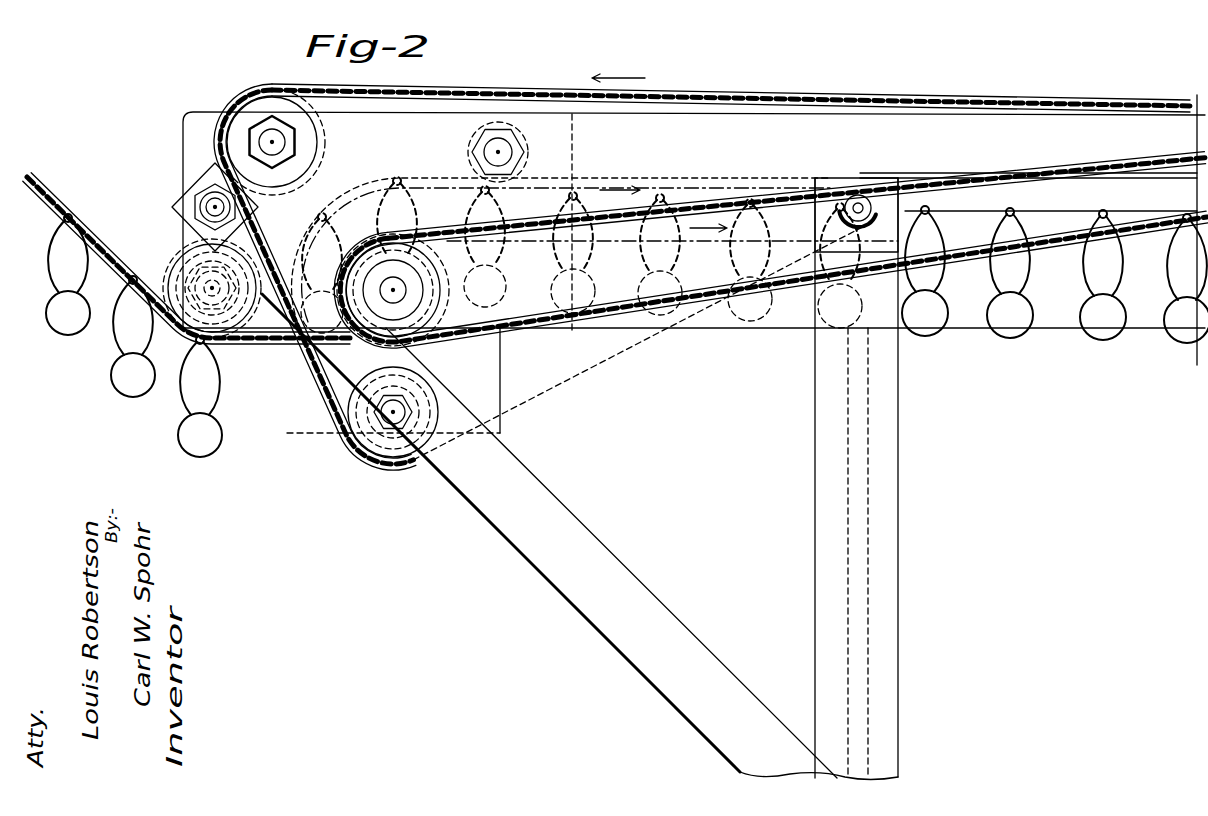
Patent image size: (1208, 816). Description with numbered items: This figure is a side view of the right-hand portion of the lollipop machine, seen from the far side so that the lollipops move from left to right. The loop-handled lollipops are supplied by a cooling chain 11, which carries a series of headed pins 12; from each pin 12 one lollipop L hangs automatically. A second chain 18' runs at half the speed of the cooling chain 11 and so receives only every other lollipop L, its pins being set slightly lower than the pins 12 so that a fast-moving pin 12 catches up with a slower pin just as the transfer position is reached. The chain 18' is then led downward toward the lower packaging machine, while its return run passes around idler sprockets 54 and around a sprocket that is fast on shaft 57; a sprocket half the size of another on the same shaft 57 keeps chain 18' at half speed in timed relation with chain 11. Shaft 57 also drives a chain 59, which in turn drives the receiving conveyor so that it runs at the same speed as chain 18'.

The cooling chain 11 is at (104, 250).
The headed pin 12 is at (70, 214).
The chain 18' is at (731, 169).
The idler sprocket 54 is at (258, 103).
The shaft 57 is at (394, 298).
The chain 59 is at (1180, 161).
The lollipop L is at (117, 367).